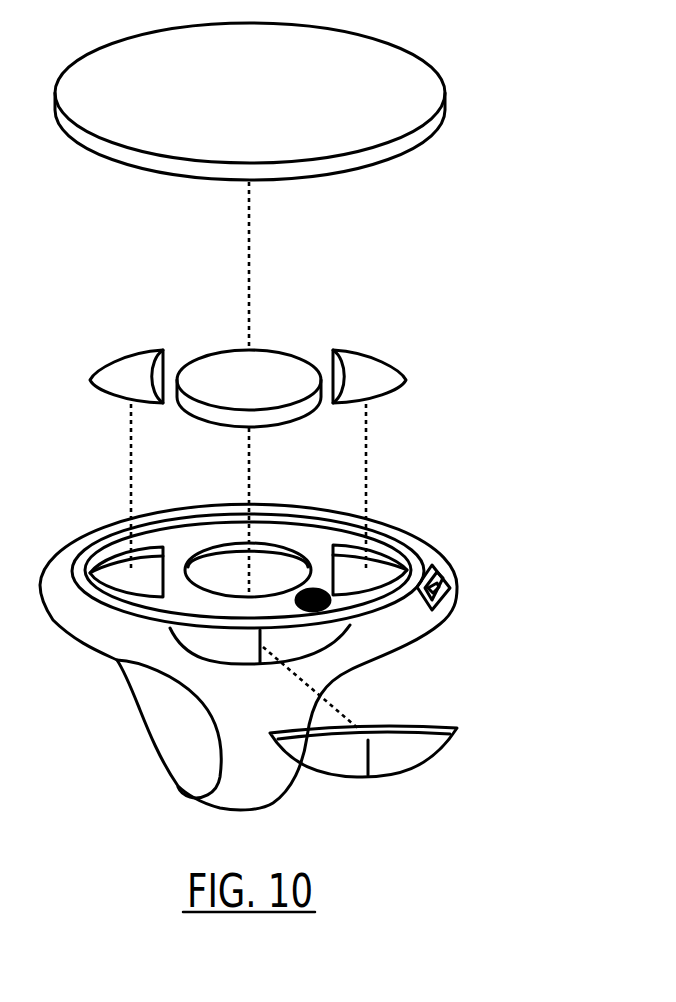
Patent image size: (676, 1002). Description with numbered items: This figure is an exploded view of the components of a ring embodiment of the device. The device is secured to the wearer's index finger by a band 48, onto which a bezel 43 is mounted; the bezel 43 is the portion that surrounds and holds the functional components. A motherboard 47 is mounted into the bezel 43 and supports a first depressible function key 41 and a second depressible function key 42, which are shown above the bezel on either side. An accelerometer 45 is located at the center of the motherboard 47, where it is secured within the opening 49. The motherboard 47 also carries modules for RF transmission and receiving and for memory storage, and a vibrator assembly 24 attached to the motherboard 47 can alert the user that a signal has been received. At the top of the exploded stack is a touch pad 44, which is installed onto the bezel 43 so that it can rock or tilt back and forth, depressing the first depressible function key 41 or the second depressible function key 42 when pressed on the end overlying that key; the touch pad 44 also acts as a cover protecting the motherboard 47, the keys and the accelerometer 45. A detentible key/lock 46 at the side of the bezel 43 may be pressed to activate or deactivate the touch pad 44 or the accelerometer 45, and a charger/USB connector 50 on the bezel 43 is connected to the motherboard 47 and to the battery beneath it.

The touch pad 44 is at (357, 60).
The second depressible function key 42 is at (132, 368).
The accelerometer 45 is at (273, 370).
The first depressible function key 41 is at (373, 372).
The opening 49 is at (207, 572).
The bezel 43 is at (423, 553).
The charger/USB connector 50 is at (450, 600).
The vibrator assembly 24 is at (318, 612).
The motherboard 47 is at (360, 600).
The detentible key/lock 46 is at (387, 778).
The band 48 is at (253, 795).